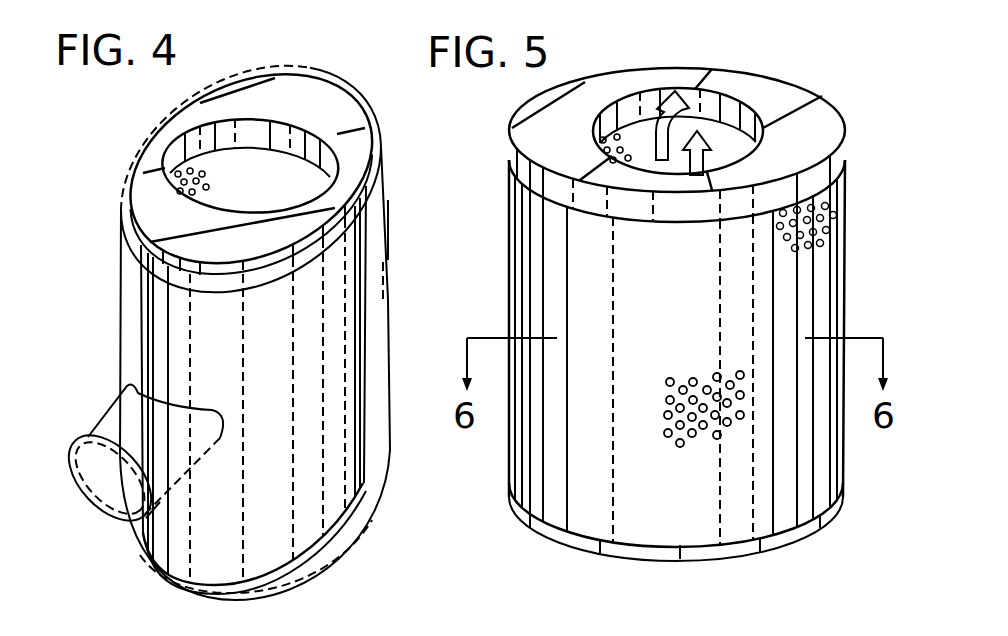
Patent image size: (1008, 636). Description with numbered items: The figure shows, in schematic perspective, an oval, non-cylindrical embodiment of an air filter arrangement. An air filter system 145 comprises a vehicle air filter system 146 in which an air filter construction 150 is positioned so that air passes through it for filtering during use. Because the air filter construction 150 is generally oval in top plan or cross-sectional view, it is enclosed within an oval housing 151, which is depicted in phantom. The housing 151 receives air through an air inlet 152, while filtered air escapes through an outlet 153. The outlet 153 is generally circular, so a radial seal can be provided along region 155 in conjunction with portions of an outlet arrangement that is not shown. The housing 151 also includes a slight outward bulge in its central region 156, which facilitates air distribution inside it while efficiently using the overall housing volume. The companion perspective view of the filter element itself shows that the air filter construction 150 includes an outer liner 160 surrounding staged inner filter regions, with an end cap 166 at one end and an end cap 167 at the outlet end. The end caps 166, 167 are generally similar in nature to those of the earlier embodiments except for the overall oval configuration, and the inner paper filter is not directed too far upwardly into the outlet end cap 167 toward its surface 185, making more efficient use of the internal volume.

In FIG. 4, the air filter system 145 is at (262, 304).
In FIG. 4, the vehicle air filter system 146 is at (400, 48).
In FIG. 4, the air filter construction 150 is at (156, 218).
In FIG. 5, the air filter construction 150 is at (828, 278).
In FIG. 4, the oval housing 151 is at (391, 262).
In FIG. 4, the air inlet 152 is at (80, 426).
In FIG. 4, the outlet 153 is at (233, 133).
In FIG. 4, the region 155 is at (270, 140).
In FIG. 4, the central region 156 is at (391, 298).
In FIG. 5, the outer liner 160 is at (815, 252).
In FIG. 5, the end cap 166 is at (738, 546).
In FIG. 5, the end cap 167 is at (812, 100).
In FIG. 5, the surface 185 is at (740, 80).